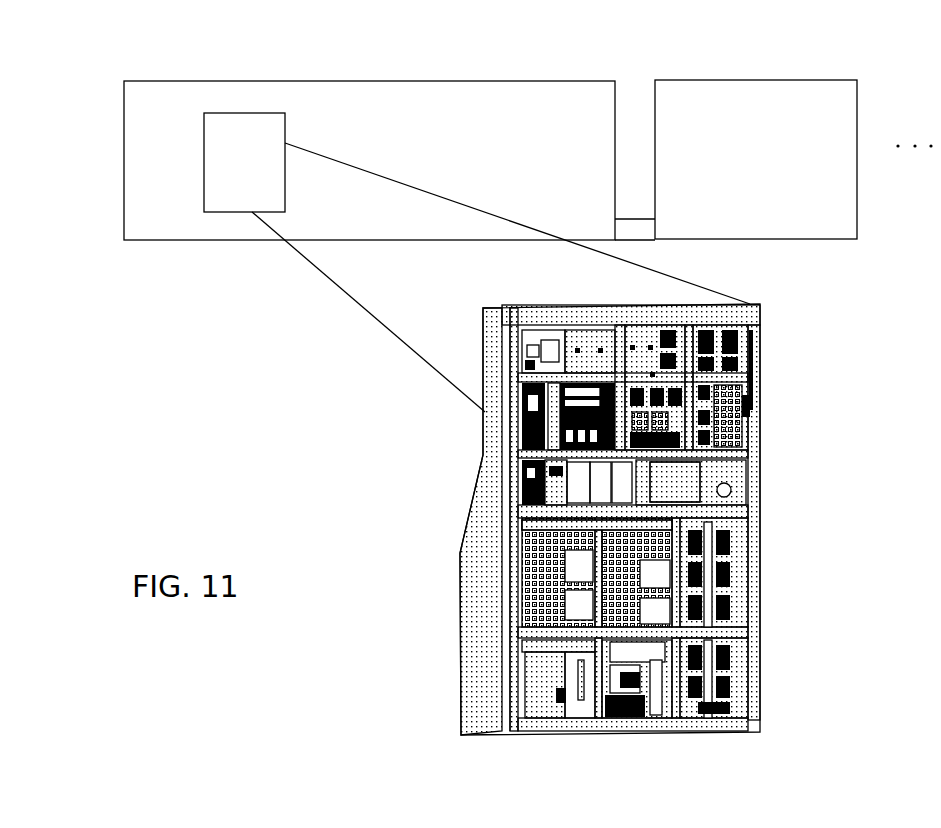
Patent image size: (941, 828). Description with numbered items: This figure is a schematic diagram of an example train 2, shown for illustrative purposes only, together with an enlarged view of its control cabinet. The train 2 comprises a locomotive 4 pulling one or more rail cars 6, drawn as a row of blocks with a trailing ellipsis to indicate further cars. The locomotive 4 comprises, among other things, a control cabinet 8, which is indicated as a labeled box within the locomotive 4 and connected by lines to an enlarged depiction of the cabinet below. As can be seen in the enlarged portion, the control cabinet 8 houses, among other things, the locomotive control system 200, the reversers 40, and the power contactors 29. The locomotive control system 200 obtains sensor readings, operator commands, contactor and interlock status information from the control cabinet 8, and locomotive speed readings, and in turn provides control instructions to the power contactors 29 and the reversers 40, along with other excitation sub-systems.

The train 2 is at (693, 45).
The locomotive 4 is at (527, 80).
The rail car 6 is at (815, 228).
The control cabinet 8 is at (285, 122).
The locomotive control system 200 is at (527, 476).
The reversers 40 is at (548, 580).
The power contactors 29 is at (737, 558).